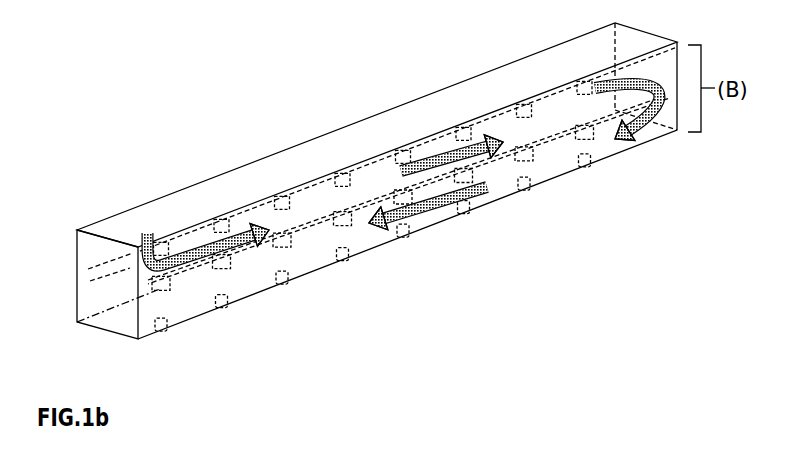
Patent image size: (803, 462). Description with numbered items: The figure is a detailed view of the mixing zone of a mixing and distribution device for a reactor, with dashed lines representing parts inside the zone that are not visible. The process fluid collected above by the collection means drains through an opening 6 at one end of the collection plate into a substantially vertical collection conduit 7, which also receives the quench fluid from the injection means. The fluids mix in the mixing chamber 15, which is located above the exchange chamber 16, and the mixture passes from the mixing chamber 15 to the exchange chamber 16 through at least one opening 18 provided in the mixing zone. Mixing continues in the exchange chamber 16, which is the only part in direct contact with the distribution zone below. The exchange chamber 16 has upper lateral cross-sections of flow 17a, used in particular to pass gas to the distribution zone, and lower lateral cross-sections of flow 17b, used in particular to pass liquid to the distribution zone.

The opening 6 is at (107, 225).
The collection conduit 7 is at (118, 267).
The mixing chamber 15 is at (318, 199).
The exchange chamber 16 is at (203, 297).
The upper lateral cross-section of flow 17a is at (343, 230).
The lower lateral cross-section of flow 17b is at (463, 200).
The opening 18 is at (653, 118).